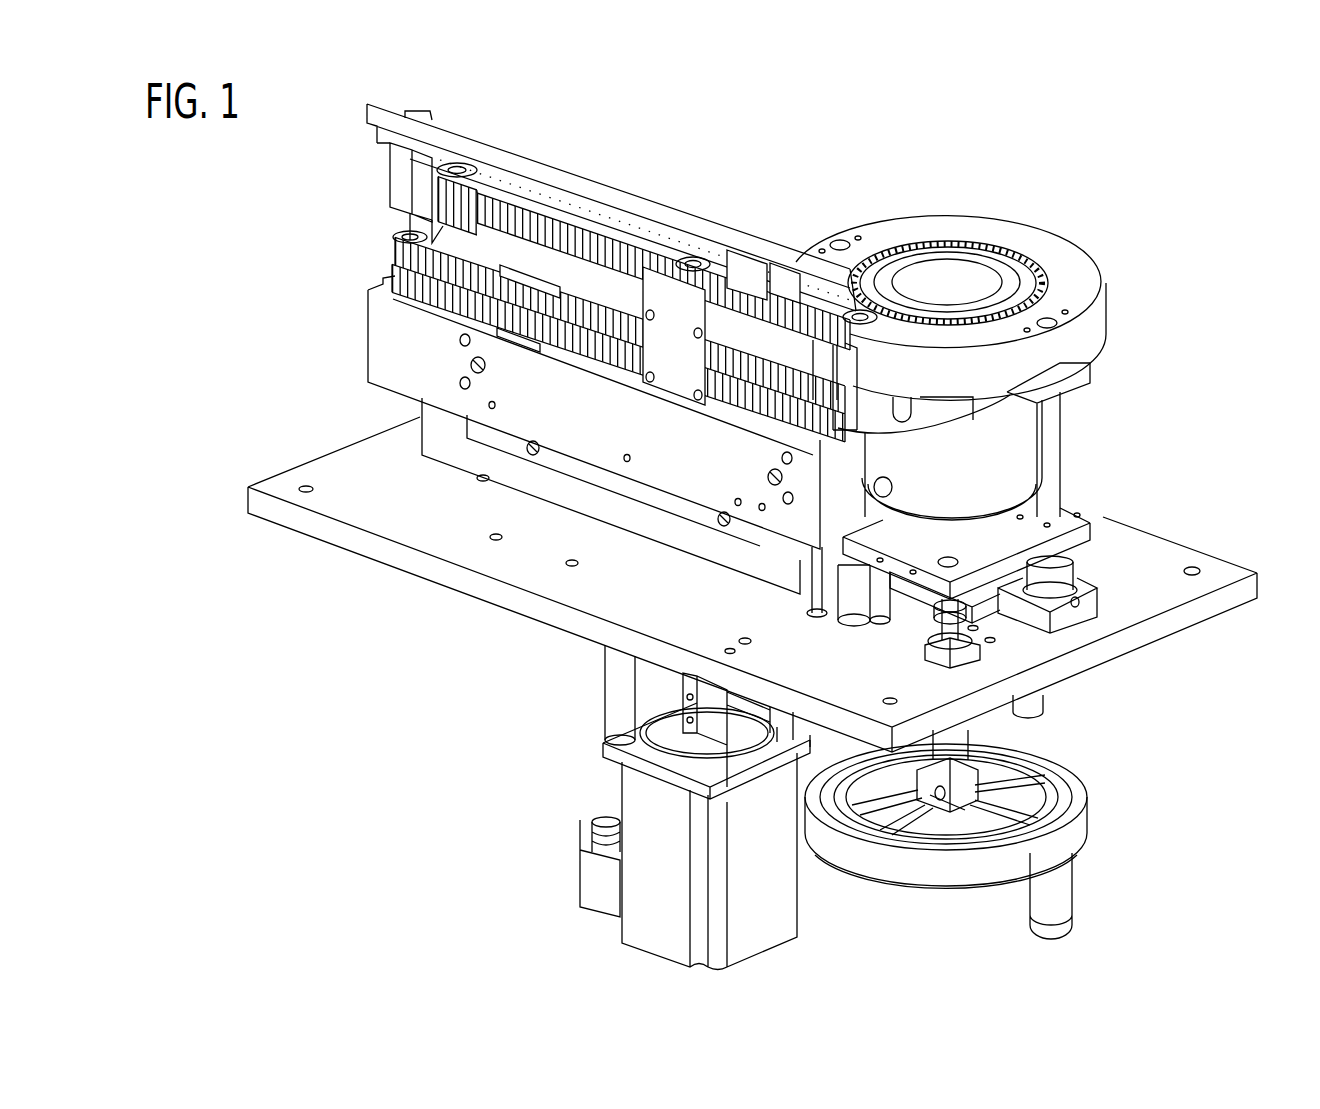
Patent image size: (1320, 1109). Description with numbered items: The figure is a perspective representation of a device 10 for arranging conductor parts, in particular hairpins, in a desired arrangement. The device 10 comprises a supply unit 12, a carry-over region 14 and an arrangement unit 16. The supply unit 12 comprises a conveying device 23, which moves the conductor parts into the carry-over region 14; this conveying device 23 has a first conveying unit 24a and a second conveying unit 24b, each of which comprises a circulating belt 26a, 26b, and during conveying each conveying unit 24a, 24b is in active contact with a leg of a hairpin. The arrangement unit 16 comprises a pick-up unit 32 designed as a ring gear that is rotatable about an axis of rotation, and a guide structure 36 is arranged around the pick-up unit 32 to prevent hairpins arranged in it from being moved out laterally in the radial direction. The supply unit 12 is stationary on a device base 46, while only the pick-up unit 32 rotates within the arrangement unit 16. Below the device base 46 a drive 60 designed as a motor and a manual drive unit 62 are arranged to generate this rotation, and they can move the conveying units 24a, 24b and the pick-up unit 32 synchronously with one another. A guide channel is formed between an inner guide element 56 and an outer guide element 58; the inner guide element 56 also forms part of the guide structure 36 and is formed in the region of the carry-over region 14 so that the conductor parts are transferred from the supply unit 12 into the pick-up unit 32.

The device 10 is at (818, 137).
The supply unit 12 is at (673, 187).
The carry-over region 14 is at (902, 397).
The arrangement unit 16 is at (1140, 280).
The conveying device 23 is at (395, 172).
The first conveying unit 24a is at (477, 203).
The second conveying unit 24b is at (413, 267).
The circulating belt 26a is at (610, 247).
The circulating belt 26b is at (488, 300).
The pick-up unit 32 is at (968, 252).
The guide structure 36 is at (1058, 252).
The device base 46 is at (443, 547).
The inner guide element 56 is at (900, 327).
The outer guide element 58 is at (858, 378).
The drive 60 is at (637, 920).
The manual drive unit 62 is at (957, 732).